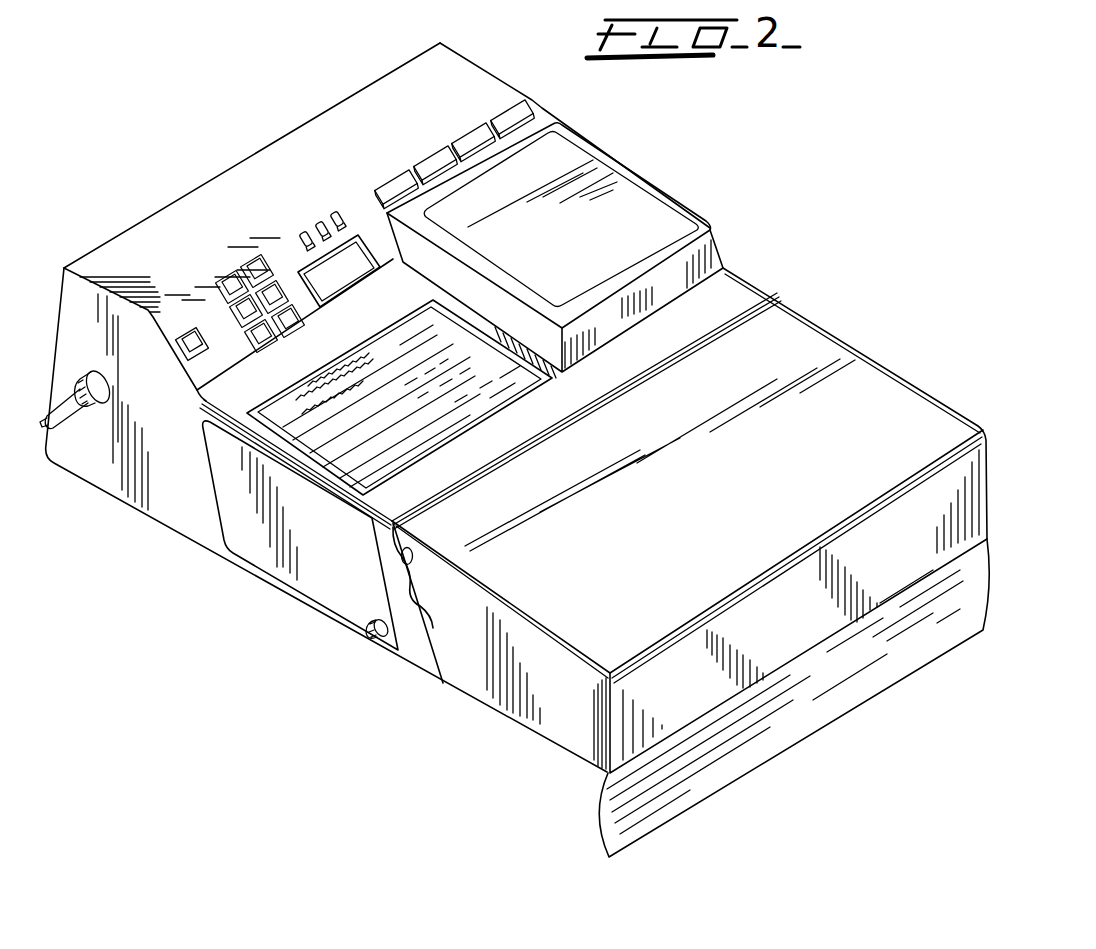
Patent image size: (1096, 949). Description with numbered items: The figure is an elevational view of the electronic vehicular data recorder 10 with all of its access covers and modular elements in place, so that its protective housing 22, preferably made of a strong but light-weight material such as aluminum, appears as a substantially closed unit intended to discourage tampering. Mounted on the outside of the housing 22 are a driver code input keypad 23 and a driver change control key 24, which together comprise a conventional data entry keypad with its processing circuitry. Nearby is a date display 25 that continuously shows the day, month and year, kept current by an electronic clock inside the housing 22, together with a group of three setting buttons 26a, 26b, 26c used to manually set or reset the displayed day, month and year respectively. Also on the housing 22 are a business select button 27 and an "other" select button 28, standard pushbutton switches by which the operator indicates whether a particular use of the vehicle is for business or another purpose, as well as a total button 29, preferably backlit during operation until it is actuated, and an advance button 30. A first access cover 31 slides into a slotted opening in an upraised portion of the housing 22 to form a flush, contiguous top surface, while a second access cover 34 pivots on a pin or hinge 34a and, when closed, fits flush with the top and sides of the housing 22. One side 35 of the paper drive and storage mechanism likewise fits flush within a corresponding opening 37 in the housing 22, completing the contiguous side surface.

The data recorder 10 is at (235, 158).
The protective housing 22 is at (181, 478).
The driver code input keypad 23 is at (234, 264).
The driver change control key 24 is at (184, 344).
The date display 25 is at (362, 295).
The setting button 26a is at (301, 233).
The setting button 26b is at (320, 223).
The setting button 26c is at (337, 210).
The business select button 27 is at (388, 180).
The other select button 28 is at (426, 165).
The total button 29 is at (463, 147).
The advance button 30 is at (504, 112).
The first access cover 31 is at (637, 206).
The second access cover 34 is at (890, 395).
The pin or hinge 34a is at (410, 557).
The side of paper drive and storage mechanism 35 is at (310, 582).
The opening 37 is at (470, 398).